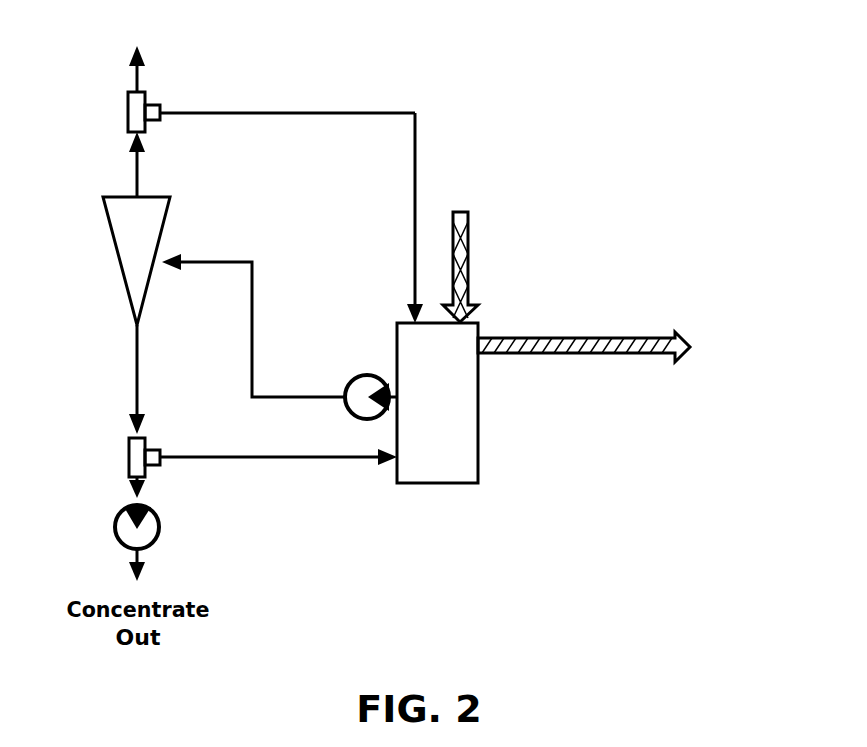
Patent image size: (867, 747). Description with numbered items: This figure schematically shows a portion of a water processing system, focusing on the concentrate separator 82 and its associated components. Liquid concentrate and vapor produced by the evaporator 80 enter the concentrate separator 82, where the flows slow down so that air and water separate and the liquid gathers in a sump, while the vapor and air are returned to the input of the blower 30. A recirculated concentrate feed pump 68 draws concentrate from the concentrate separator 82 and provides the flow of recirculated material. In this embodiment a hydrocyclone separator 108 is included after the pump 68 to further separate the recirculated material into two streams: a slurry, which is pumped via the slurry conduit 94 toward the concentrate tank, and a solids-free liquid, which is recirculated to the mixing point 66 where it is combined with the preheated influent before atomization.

The mixing point 66 is at (130, 52).
The hydrocyclone separator 108 is at (112, 236).
The slurry conduit 94 is at (130, 558).
The recirculated concentrate feed pump 68 is at (347, 418).
The concentrate separator 82 is at (437, 403).
The evaporator 80 is at (495, 252).
The blower 30 is at (618, 347).